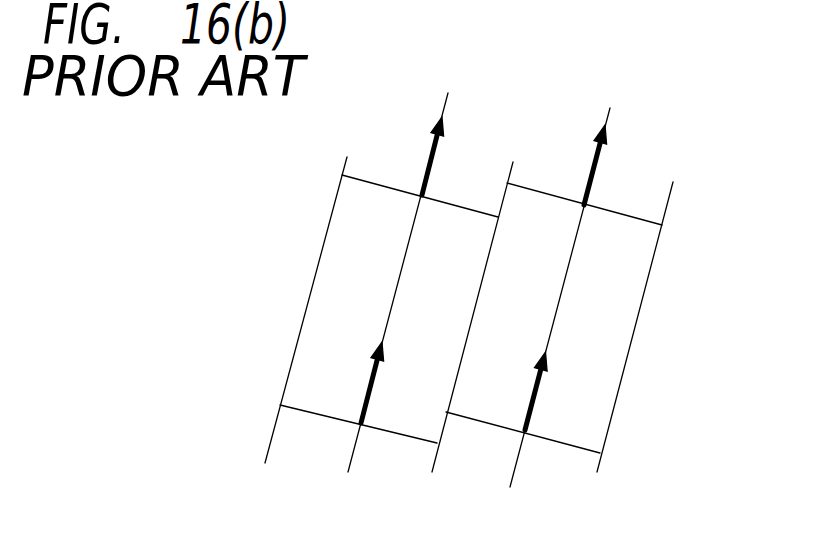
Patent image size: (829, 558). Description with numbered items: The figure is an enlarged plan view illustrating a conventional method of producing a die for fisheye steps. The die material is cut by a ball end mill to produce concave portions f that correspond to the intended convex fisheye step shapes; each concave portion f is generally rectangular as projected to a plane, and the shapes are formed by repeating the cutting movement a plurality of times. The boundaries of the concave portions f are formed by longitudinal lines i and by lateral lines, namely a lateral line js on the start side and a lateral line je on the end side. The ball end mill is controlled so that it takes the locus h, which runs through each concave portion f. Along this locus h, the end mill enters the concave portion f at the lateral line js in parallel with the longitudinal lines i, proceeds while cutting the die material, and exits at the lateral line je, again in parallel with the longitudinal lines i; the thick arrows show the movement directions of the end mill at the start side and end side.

The concave portion f is at (340, 191).
The longitudinal line i is at (310, 292).
The locus h is at (395, 303).
The lateral line on the end side je is at (384, 181).
The lateral line on the start side js is at (322, 411).